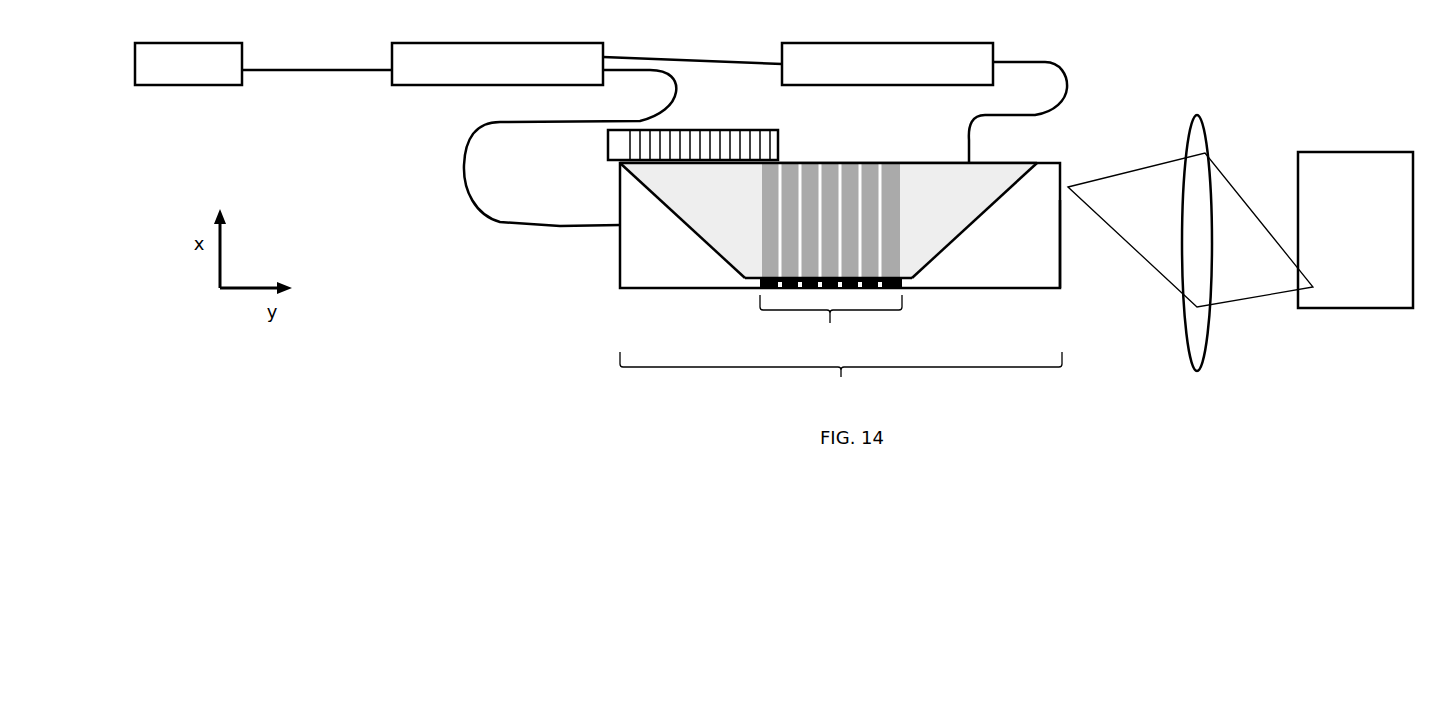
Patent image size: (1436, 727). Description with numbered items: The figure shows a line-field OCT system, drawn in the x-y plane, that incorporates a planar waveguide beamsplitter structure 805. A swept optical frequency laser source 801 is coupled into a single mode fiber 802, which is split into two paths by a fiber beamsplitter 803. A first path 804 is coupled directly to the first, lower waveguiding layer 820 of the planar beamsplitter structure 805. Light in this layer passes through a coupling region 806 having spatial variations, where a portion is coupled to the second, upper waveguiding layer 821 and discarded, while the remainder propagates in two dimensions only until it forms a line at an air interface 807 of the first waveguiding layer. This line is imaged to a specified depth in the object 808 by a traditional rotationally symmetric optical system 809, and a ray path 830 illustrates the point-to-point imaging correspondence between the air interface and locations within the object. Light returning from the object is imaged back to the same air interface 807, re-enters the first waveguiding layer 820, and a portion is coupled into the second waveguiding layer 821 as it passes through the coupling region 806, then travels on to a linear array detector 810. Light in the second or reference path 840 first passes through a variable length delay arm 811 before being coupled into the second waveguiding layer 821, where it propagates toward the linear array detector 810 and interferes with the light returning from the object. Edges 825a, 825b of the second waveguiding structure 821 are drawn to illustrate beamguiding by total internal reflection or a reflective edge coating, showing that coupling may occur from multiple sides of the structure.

The swept optical frequency laser source 801 is at (188, 64).
The single mode fiber 802 is at (317, 82).
The fiber beamsplitter 803 is at (497, 64).
The first path 804 is at (461, 187).
The planar beamsplitter structure 805 is at (841, 381).
The coupling region 806 is at (831, 315).
The air interface 807 is at (1062, 263).
The object 808 is at (1355, 230).
The rotationally symmetric optical system 809 is at (1197, 383).
The linear array detector 810 is at (783, 143).
The variable length delay arm 811 is at (887, 64).
The first waveguiding layer 820 is at (643, 259).
The second waveguiding layer 821 is at (940, 197).
The edge of the second waveguiding structure 825a is at (700, 225).
The edge of the second waveguiding structure 825b is at (977, 225).
The ray path 830 is at (1125, 170).
The reference path 840 is at (692, 58).